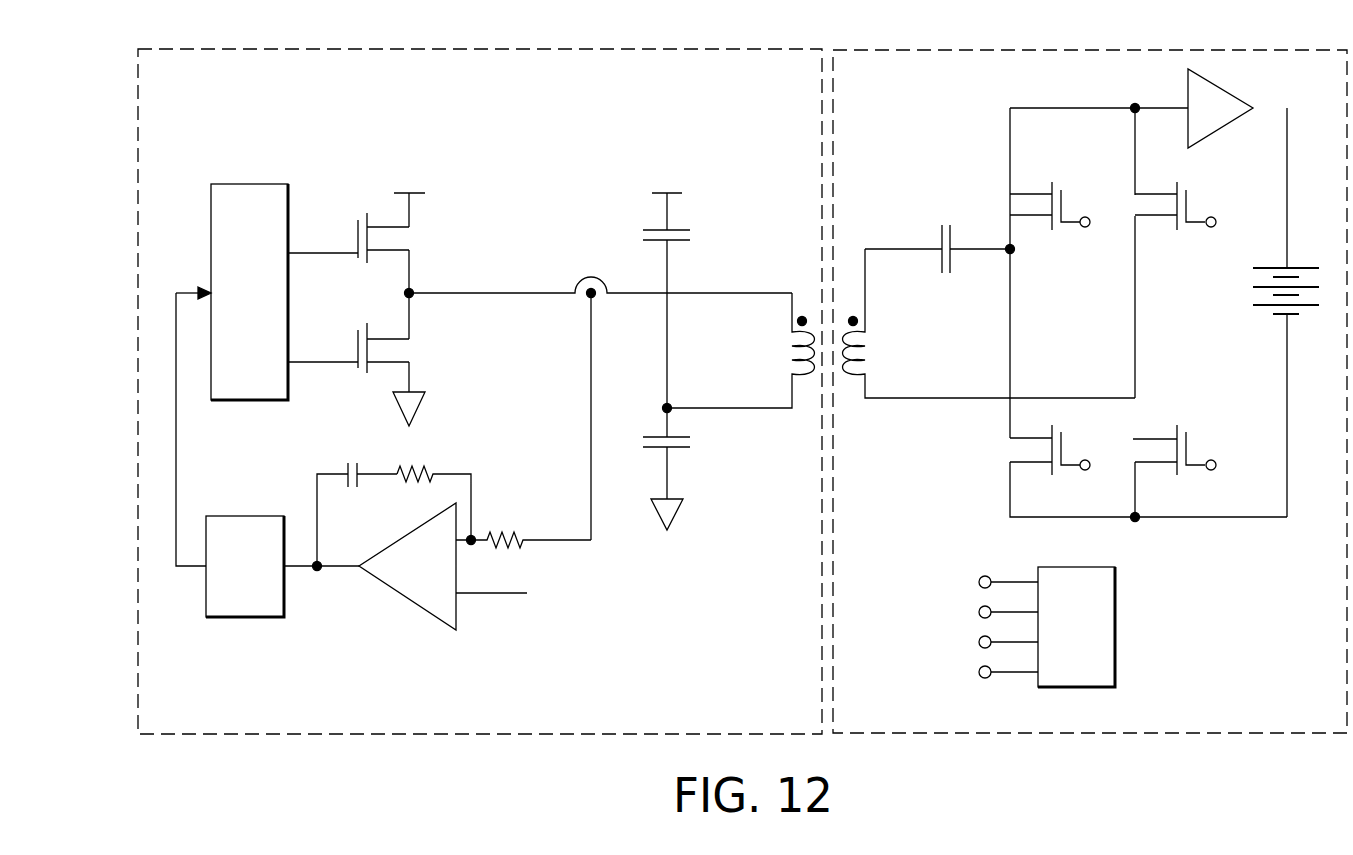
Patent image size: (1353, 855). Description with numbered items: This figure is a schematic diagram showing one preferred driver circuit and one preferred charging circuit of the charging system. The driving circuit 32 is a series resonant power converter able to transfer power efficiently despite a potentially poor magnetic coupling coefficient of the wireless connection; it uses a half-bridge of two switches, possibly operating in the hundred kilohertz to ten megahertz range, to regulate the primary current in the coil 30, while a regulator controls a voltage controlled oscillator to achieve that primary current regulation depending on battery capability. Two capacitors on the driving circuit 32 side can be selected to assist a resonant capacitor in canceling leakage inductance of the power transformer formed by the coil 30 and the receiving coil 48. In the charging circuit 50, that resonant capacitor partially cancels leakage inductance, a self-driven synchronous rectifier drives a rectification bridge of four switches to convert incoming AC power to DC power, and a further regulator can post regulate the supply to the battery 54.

The driving circuit 32 is at (474, 50).
The charging circuit 50 is at (1114, 50).
The coil 30 is at (772, 350).
The receiving coil 48 is at (888, 360).
The battery 54 is at (1248, 317).